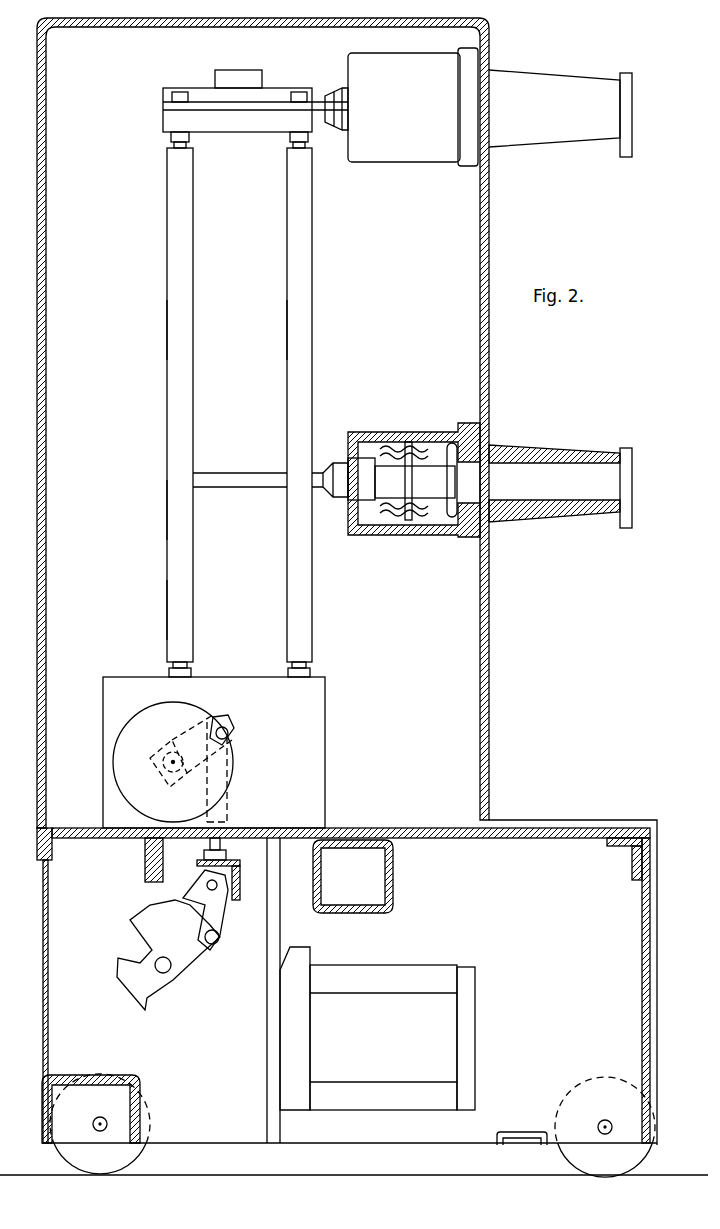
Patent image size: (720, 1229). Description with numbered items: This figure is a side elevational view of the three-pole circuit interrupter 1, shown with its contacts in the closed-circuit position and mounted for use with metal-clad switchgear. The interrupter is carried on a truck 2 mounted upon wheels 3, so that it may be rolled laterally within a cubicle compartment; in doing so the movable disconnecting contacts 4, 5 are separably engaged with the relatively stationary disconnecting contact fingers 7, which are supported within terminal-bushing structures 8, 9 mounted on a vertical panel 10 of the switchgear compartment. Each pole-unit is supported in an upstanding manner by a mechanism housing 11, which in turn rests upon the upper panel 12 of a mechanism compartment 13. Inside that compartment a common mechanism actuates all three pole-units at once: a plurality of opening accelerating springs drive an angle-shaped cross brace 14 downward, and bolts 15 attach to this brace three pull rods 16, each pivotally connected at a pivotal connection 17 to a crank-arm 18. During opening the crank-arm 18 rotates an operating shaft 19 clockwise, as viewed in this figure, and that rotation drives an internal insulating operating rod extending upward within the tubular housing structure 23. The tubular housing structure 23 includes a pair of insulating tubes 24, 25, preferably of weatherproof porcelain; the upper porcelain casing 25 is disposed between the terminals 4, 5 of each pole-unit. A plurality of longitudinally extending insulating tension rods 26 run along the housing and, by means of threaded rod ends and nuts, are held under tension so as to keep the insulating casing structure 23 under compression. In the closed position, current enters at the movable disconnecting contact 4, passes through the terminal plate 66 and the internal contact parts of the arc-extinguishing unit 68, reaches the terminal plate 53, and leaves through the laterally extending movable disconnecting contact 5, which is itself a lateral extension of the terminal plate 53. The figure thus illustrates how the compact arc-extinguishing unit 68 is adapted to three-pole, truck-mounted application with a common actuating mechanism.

The three-pole circuit interrupter 1 is at (119, 163).
The truck 2 is at (650, 1005).
The wheels 3 is at (73, 1150).
The movable disconnecting contact 4 is at (333, 92).
The movable disconnecting contact 5 is at (343, 463).
The stationary disconnecting contact fingers 7 is at (401, 520).
The terminal-bushing structure 8 is at (395, 162).
The terminal-bushing structure 9 is at (387, 432).
The vertical panel 10 is at (489, 197).
The mechanism housing 11 is at (333, 727).
The upper panel 12 is at (352, 828).
The mechanism compartment 13 is at (201, 1005).
The cross brace 14 is at (237, 895).
The bolts 15 is at (207, 845).
The pull rod 16 is at (228, 806).
The pivotal connection 17 is at (234, 742).
The crank-arm 18 is at (183, 740).
The operating shaft 19 is at (188, 780).
The tubular housing structure 23 is at (207, 603).
The insulating tube 24 is at (210, 510).
The insulating tube 25 is at (210, 258).
The tension rods 26 is at (167, 331).
The terminal plate 53 is at (254, 472).
The terminal plate 66 is at (163, 106).
The arc-extinguishing unit 68 is at (275, 266).